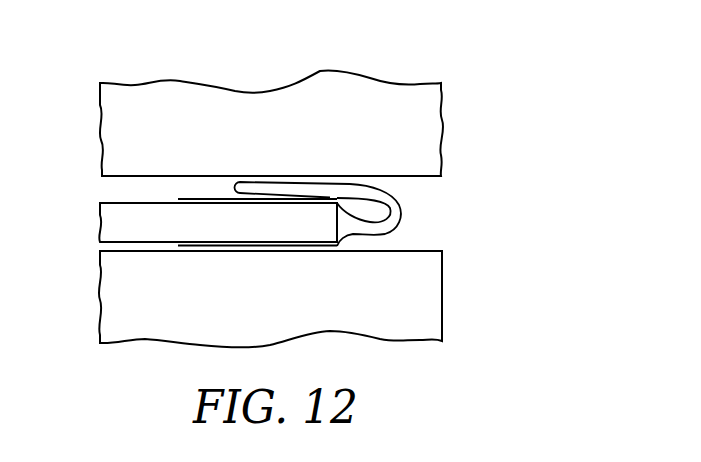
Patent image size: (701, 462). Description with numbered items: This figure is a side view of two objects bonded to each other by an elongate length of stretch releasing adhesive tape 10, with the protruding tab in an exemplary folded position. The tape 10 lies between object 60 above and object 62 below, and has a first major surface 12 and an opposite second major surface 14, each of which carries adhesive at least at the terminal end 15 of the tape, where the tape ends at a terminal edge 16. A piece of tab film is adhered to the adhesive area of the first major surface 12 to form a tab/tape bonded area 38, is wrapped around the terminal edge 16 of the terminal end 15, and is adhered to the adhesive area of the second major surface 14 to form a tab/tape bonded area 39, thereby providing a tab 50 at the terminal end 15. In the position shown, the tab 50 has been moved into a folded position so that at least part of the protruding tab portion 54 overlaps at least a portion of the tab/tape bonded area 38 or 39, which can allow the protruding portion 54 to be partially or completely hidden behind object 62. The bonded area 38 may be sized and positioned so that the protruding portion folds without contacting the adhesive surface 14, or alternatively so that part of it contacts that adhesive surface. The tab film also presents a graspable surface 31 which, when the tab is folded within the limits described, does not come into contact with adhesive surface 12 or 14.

The elongate length of stretch releasing adhesive tape 10 is at (140, 200).
The first major surface 12 is at (105, 252).
The second major surface 14 is at (254, 210).
The terminal end 15 is at (318, 196).
The terminal edge 16 is at (337, 219).
The graspable surface 31 is at (262, 198).
The tab/tape bonded area 38 is at (208, 246).
The tab/tape bonded area 39 is at (205, 202).
The tab 50 is at (397, 189).
The protruding tab portion 54 is at (402, 203).
The object 60 is at (243, 105).
The object 62 is at (143, 338).